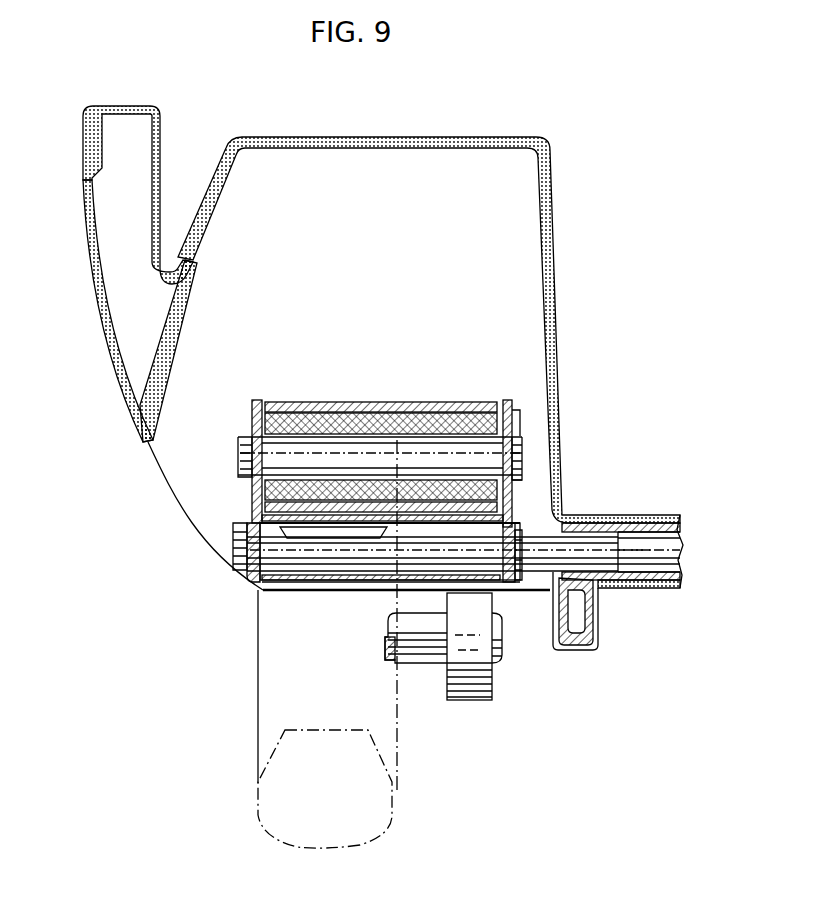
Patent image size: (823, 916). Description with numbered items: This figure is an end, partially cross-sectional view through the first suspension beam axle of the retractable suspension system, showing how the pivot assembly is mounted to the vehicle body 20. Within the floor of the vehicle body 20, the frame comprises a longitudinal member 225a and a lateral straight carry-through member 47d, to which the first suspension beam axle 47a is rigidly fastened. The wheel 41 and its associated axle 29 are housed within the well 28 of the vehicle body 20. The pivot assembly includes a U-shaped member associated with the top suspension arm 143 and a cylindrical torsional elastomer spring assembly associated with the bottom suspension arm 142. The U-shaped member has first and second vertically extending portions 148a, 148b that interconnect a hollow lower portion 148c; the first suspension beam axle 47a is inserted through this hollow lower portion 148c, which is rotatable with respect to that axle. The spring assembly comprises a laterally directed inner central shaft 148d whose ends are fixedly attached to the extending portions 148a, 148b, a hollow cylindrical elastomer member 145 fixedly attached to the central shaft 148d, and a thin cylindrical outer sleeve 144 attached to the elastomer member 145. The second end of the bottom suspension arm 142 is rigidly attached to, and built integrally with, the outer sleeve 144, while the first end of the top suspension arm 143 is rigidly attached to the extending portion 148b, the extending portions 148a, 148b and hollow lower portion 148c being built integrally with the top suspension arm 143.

The vehicle body 20 is at (100, 317).
The well 28 is at (556, 342).
The axle 29 is at (418, 650).
The wheel 41 is at (382, 786).
The first suspension beam axle 47a is at (233, 542).
The lateral straight carry-through member 47d is at (668, 568).
The bottom suspension arm 142 is at (492, 691).
The top suspension arm 143 is at (508, 402).
The outer sleeve 144 is at (395, 404).
The hollow cylindrical elastomer member 145 is at (300, 422).
The first vertically extending portion 148a is at (252, 405).
The second vertically extending portion 148b is at (512, 418).
The hollow lower portion 148c is at (292, 555).
The inner central shaft 148d is at (520, 459).
The longitudinal member 225a is at (590, 652).